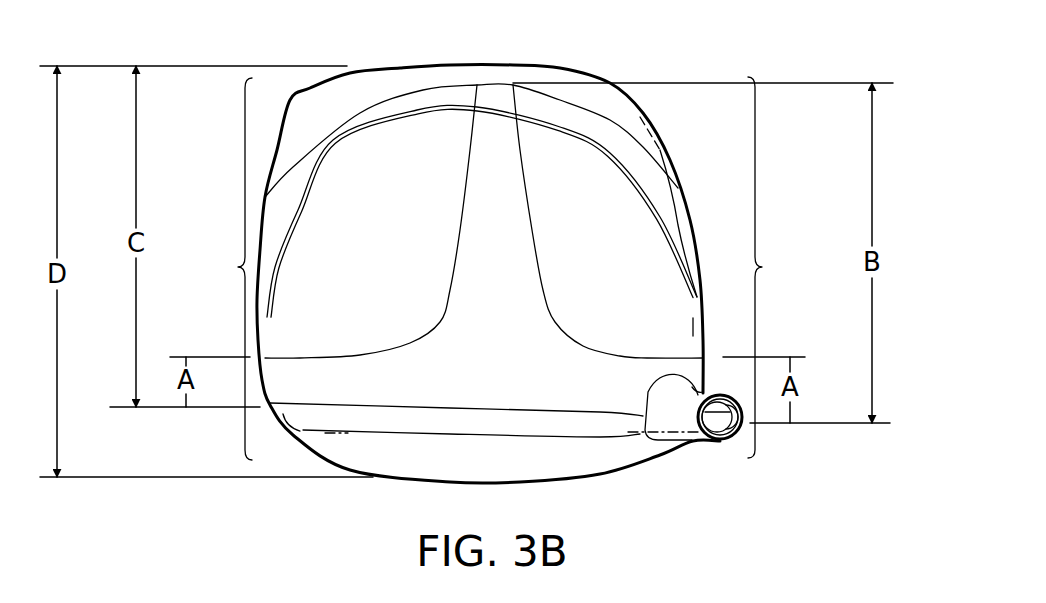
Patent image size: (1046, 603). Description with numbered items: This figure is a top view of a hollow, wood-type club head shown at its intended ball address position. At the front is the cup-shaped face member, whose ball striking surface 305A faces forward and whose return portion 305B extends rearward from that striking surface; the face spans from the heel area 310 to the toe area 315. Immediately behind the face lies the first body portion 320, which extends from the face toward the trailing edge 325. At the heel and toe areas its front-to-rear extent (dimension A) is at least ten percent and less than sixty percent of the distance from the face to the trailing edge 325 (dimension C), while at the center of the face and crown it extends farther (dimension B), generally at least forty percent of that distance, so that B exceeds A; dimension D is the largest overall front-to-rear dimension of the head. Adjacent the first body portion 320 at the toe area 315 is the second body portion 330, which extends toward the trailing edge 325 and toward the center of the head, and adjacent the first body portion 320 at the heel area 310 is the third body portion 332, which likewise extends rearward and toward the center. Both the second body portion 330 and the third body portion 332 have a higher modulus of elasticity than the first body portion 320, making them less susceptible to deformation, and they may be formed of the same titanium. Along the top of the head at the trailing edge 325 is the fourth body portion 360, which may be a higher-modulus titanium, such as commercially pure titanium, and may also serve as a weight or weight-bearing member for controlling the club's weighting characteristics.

The ball striking surface 305A is at (583, 460).
The return portion 305B is at (503, 417).
The heel area 310 is at (738, 267).
The toe area 315 is at (210, 269).
The first body portion 320 is at (484, 221).
The trailing edge 325 is at (482, 168).
The second body portion 330 is at (361, 252).
The third body portion 332 is at (605, 231).
The fourth body portion 360 is at (332, 102).